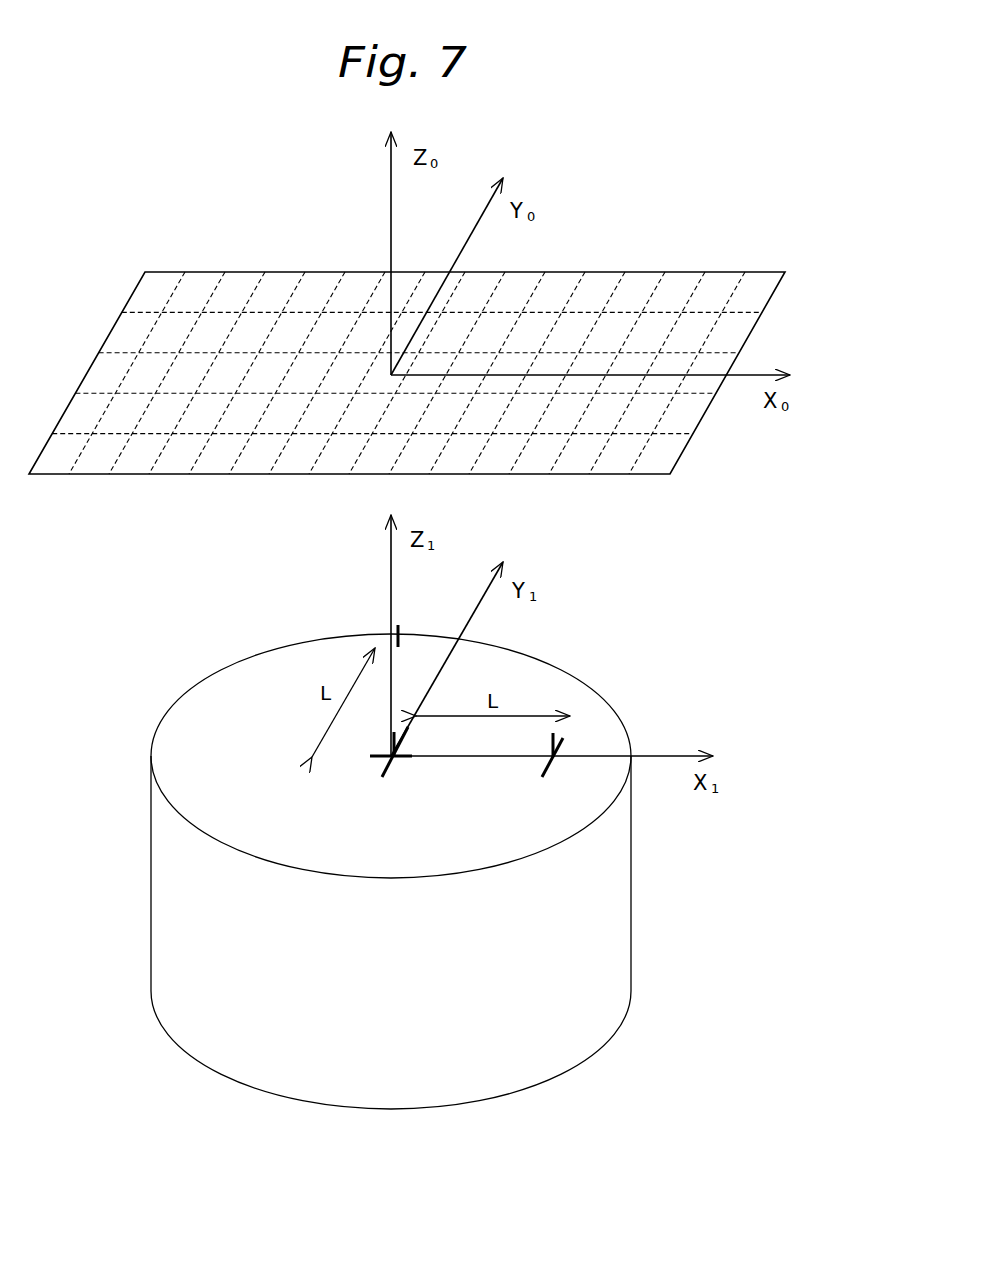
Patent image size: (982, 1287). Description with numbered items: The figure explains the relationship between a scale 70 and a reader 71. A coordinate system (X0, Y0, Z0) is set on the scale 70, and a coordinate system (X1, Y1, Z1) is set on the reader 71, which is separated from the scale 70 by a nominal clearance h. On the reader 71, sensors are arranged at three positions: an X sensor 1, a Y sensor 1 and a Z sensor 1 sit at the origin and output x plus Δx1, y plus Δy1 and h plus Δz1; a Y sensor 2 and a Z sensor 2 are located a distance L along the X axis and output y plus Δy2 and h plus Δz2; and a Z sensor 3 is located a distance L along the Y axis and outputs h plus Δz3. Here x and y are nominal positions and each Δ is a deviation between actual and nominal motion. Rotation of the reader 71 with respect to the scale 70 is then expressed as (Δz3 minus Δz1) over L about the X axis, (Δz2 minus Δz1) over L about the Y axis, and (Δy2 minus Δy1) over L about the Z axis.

The scale 70 is at (643, 473).
The reader 71 is at (627, 937).
The X sensor 1, Y sensor 1 and Z sensor 1 is at (390, 745).
The Y sensor 2 and Z sensor 2 is at (551, 737).
The Z sensor 3 is at (392, 635).